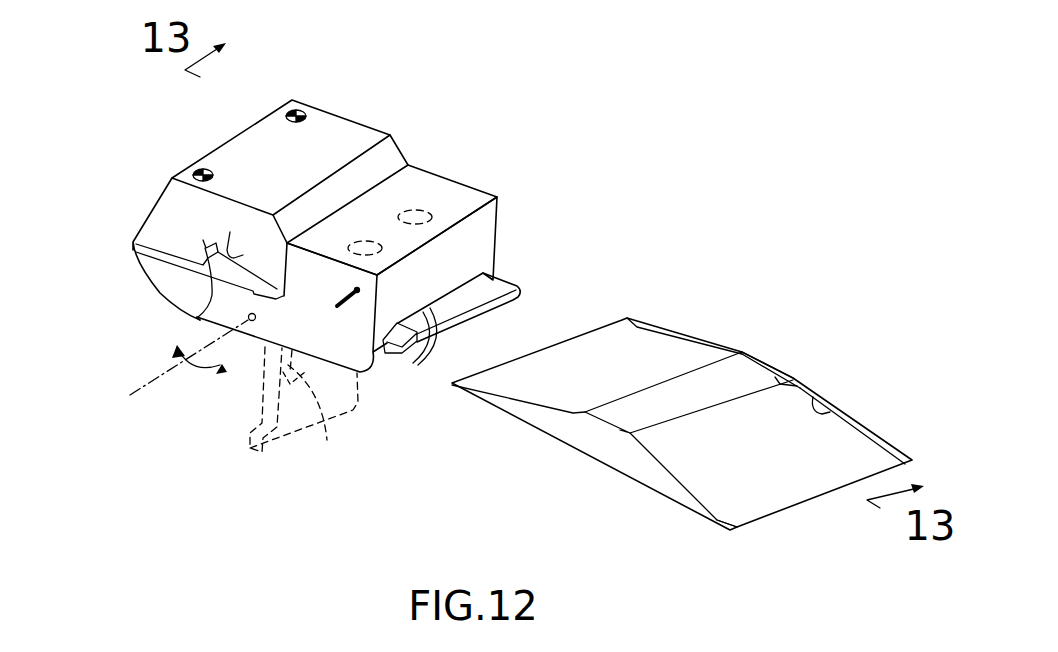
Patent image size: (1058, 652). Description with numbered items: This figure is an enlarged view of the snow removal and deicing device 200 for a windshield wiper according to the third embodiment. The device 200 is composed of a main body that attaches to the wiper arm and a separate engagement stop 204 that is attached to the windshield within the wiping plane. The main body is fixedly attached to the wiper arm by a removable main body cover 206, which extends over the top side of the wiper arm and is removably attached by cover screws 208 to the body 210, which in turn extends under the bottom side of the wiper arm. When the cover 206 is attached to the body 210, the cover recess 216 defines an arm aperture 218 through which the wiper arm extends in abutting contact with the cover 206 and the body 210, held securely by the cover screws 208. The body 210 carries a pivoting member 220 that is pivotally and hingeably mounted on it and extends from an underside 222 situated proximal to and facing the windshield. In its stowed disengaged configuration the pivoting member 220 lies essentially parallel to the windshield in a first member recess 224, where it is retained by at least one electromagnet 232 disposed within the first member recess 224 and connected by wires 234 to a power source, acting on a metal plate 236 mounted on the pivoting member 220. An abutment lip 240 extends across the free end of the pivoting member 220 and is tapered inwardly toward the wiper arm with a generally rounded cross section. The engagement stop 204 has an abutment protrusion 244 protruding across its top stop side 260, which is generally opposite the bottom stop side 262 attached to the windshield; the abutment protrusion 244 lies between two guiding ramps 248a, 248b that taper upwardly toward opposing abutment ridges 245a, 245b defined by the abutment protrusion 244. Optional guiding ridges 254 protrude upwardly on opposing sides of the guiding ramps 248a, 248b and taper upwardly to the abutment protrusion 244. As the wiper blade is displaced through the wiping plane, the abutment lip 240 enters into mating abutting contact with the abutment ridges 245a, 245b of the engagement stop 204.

The snow removal and deicing device 200 is at (621, 137).
The engagement stop 204 is at (562, 430).
The main body cover 206 is at (267, 120).
The cover screws 208 is at (299, 112).
The body 210 is at (157, 293).
The cover recess 216 is at (193, 320).
The arm aperture 218 is at (227, 250).
The pivoting member 220 is at (495, 283).
The underside 222 is at (237, 336).
The first member recess 224 is at (412, 353).
The electromagnet 232 is at (373, 240).
The wires 234 is at (345, 304).
The metal plate 236 is at (320, 419).
The abutment lip 240 is at (470, 320).
The abutment protrusion 244 is at (765, 360).
The first abutment ridge 245a is at (662, 383).
The second abutment ridge 245b is at (670, 413).
The first guiding ramp 248a is at (607, 360).
The second guiding ramp 248b is at (757, 477).
The guiding ridges 254 is at (681, 328).
The top stop side 260 is at (755, 360).
The bottom stop side 262 is at (665, 495).